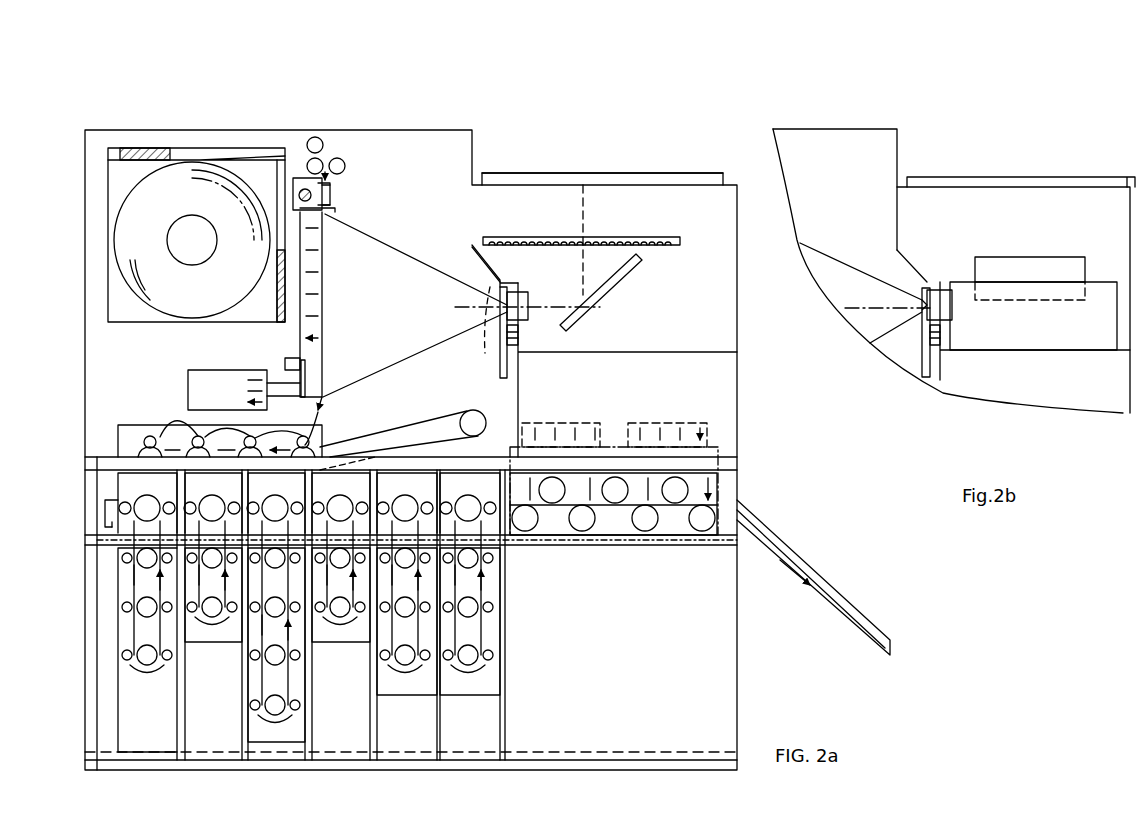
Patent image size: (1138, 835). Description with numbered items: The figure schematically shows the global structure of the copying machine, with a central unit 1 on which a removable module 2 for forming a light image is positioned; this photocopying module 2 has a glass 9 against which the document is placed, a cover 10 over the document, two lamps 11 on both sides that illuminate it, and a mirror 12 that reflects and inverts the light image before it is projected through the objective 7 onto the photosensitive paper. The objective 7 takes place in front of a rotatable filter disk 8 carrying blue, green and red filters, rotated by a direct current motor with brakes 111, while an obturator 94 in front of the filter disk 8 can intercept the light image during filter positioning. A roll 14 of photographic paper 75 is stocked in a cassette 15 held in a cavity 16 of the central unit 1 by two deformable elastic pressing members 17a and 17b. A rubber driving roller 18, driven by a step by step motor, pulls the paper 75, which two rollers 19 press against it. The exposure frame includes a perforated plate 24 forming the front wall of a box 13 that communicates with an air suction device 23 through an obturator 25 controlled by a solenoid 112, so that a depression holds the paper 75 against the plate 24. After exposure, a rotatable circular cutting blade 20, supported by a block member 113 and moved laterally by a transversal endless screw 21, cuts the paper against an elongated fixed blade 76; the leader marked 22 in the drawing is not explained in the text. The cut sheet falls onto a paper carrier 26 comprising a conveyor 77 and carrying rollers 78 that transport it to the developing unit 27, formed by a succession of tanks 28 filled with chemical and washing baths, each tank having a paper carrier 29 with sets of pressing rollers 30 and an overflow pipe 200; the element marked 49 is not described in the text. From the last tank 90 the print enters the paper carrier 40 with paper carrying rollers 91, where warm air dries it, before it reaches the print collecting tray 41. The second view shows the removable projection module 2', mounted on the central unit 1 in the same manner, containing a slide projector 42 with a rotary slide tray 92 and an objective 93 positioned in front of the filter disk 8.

In FIG. 2A, the central unit 1 is at (468, 130).
In FIG. 2B, the central unit 1 is at (890, 130).
In FIG. 2A, the removable module 2 is at (615, 321).
In FIG. 2B, the removable module 2' is at (1016, 278).
In FIG. 2A, the objective 7 is at (478, 262).
In FIG. 2B, the objective 7 is at (912, 280).
In FIG. 2A, the rotatable filter disk 8 is at (518, 352).
In FIG. 2B, the rotatable filter disk 8 is at (945, 355).
In FIG. 2A, the glass 9 is at (590, 185).
In FIG. 2A, the cover 10 is at (640, 180).
In FIG. 2A, the lamps 11 is at (682, 243).
In FIG. 2A, the mirror 12 is at (612, 290).
In FIG. 2A, the box 13 is at (322, 360).
In FIG. 2A, the roll 14 is at (142, 200).
In FIG. 2A, the cassette 15 is at (130, 322).
In FIG. 2A, the cavity 16 is at (192, 148).
In FIG. 2A, the pressing member 17a is at (145, 148).
In FIG. 2A, the pressing member 17b is at (277, 322).
In FIG. 2A, the driving roller 18 is at (330, 162).
In FIG. 2A, the rollers 19 is at (318, 137).
In FIG. 2A, the rotatable circular cutting blade 20 is at (325, 212).
In FIG. 2A, the transversal endless screw 21 is at (335, 200).
In FIG. 2A, the bracket 22 is at (332, 190).
In FIG. 2A, the air suction device 23 is at (188, 390).
In FIG. 2A, the perforated plate 24 is at (324, 325).
In FIG. 2A, the obturator 25 is at (305, 380).
In FIG. 2A, the paper carrier 26 is at (322, 440).
In FIG. 2A, the developing unit 27 is at (105, 508).
In FIG. 2A, the tanks 28 is at (250, 722).
In FIG. 2A, the paper carrier 29 is at (135, 570).
In FIG. 2A, the set of pressing rollers 30 is at (135, 603).
In FIG. 2A, the paper carrier 40 is at (560, 530).
In FIG. 2A, the print collecting tray 41 is at (820, 575).
In FIG. 2B, the slide projector 42 is at (1060, 300).
In FIG. 2A, the reel hub 49 is at (192, 255).
In FIG. 2A, the photographic paper 75 is at (308, 160).
In FIG. 2A, the elongated fixed blade 76 is at (335, 210).
In FIG. 2A, the conveyor 77 is at (435, 430).
In FIG. 2A, the carrying rollers 78 is at (198, 436).
In FIG. 2A, the last tank 90 is at (470, 680).
In FIG. 2A, the paper carrying rollers 91 is at (700, 530).
In FIG. 2B, the rotary slide tray 92 is at (1015, 262).
In FIG. 2B, the objective 93 is at (945, 290).
In FIG. 2A, the obturator 94 is at (486, 352).
In FIG. 2A, the direct current motor with brakes 111 is at (518, 338).
In FIG. 2A, the solenoid 112 is at (286, 362).
In FIG. 2A, the block member 113 is at (330, 185).
In FIG. 2A, the overflow pipe 200 is at (110, 525).